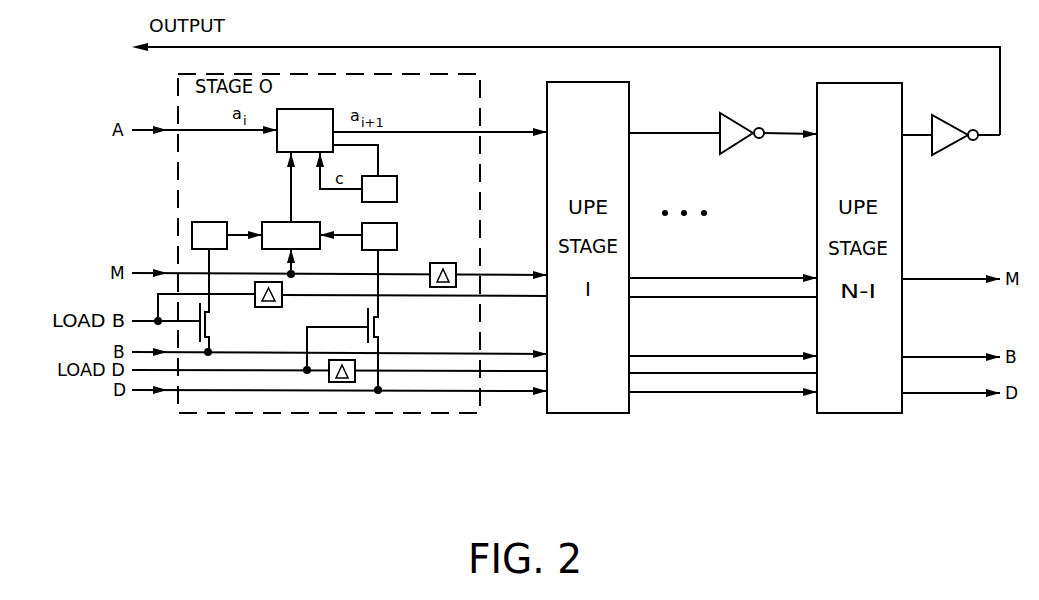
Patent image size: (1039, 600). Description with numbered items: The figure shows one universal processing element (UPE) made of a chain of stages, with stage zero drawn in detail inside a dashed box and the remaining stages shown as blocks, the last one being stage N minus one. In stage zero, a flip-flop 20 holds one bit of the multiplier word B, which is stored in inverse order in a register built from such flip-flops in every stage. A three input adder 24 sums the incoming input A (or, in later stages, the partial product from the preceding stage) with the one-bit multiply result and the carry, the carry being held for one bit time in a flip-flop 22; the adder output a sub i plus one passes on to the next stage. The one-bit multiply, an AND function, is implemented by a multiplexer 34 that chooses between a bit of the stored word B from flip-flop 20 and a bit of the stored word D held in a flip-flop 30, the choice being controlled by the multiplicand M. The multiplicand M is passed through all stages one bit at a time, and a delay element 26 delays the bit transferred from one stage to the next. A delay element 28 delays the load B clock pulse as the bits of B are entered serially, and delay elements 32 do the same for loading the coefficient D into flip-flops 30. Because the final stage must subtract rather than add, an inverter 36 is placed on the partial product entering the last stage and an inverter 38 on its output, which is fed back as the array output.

The flip-flop 20 is at (200, 221).
The flip-flop 22 is at (397, 186).
The three input adder 24 is at (277, 144).
The delay element 26 is at (434, 262).
The delay element 28 is at (259, 307).
The flip-flop 30 is at (397, 226).
The delay element 32 is at (340, 382).
The multiplexer 34 is at (310, 249).
The inverter 36 is at (739, 116).
The inverter 38 is at (950, 147).